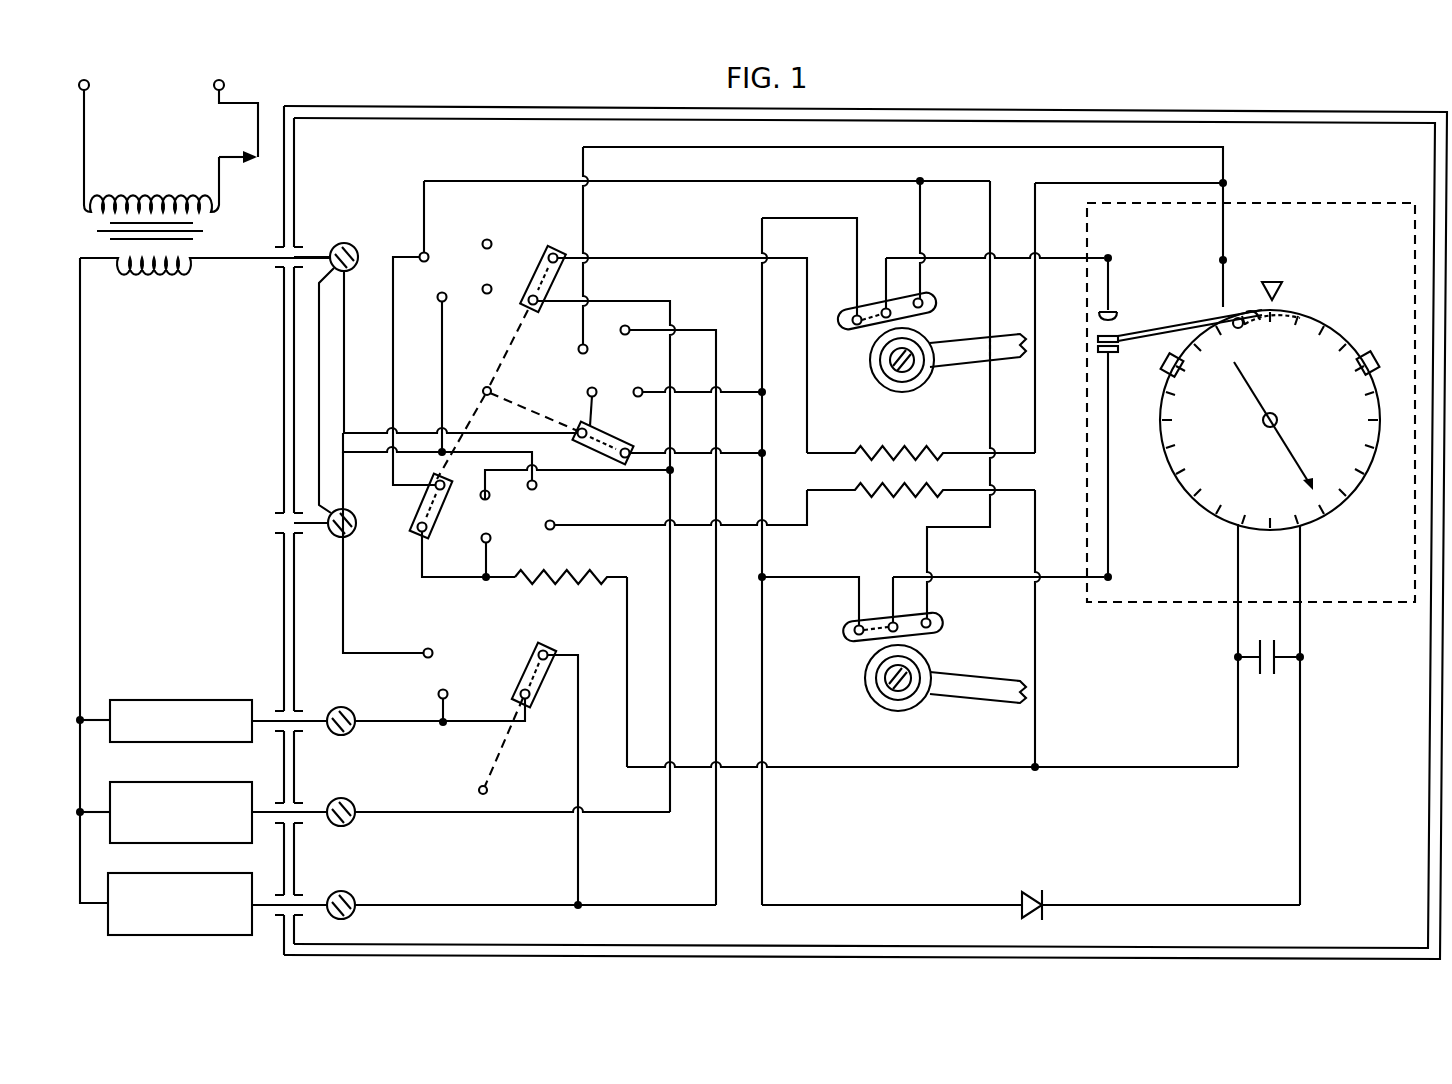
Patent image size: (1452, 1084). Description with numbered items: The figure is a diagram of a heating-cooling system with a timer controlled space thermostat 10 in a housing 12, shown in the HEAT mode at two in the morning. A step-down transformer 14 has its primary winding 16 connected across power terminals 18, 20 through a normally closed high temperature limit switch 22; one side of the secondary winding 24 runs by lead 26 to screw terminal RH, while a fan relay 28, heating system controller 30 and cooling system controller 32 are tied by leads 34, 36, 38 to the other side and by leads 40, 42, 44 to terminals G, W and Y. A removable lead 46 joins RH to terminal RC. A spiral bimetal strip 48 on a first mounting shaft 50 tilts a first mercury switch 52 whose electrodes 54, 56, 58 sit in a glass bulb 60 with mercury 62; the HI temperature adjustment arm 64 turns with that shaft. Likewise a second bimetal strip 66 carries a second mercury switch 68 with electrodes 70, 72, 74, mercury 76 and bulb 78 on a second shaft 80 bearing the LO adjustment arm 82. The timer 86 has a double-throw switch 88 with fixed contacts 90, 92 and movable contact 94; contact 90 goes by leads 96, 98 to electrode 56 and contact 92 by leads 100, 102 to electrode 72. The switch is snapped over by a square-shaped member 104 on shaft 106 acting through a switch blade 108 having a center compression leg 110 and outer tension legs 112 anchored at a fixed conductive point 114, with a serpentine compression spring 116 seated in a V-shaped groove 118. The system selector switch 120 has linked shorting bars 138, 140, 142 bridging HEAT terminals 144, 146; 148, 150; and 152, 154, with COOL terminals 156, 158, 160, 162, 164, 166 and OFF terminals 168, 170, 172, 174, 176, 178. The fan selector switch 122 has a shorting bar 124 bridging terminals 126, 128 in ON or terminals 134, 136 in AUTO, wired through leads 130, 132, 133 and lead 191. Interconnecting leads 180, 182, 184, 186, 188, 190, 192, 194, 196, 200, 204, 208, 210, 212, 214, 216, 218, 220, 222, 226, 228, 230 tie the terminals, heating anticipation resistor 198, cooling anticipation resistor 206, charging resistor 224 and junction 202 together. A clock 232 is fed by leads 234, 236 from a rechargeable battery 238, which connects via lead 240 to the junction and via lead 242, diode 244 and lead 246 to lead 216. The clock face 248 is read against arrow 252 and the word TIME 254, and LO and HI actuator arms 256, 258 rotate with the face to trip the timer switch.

The timer controlled space thermostat 10 is at (602, 108).
The housing 12 is at (392, 106).
The voltage step-down transformer 14 is at (210, 233).
The primary winding 16 is at (155, 196).
The terminal 18 is at (88, 82).
The terminal 20 is at (224, 82).
The high temperature limit switch 22 is at (240, 150).
The secondary winding 24 is at (146, 272).
The lead 26 is at (230, 260).
The fan relay 28 is at (170, 700).
The heating system controller 30 is at (170, 782).
The cooling system controller 32 is at (165, 873).
The lead 34 is at (85, 717).
The lead 36 is at (85, 809).
The lead 38 is at (85, 900).
The lead 40 is at (262, 717).
The lead 42 is at (265, 808).
The lead 44 is at (265, 900).
The lead 46 is at (318, 378).
The bimetal strip 48 is at (880, 383).
The first rotatably adjustable mounting shaft 50 is at (890, 364).
The first single-pole double-throw mercury switch 52 is at (932, 304).
The electrode 54 is at (853, 316).
The center electrode 56 is at (884, 309).
The electrode 58 is at (915, 300).
The glass bulb 60 is at (930, 315).
The mercury 62 is at (876, 332).
The first temperature adjustment arm 64 is at (960, 355).
The second bimetal strip 66 is at (877, 700).
The second single-pole double-throw mercury switch 68 is at (939, 626).
The electrode 70 is at (855, 626).
The center electrode 72 is at (890, 623).
The electrode 74 is at (922, 619).
The mercury 76 is at (872, 640).
The glass bulb 78 is at (930, 637).
The second rotatably adjustable mounting shaft 80 is at (888, 682).
The second temperature adjustment arm 82 is at (963, 692).
The timer 86 is at (1272, 203).
The single-pole double-throw switch 88 is at (1128, 323).
The fixed contact 90 is at (1100, 313).
The fixed contact 92 is at (1099, 349).
The movable contact 94 is at (1099, 338).
The lead 96 is at (1112, 278).
The lead 98 is at (1108, 256).
The lead 100 is at (1112, 540).
The lead 102 is at (1105, 580).
The square-shaped member 104 is at (1295, 312).
The shaft 106 is at (1265, 336).
The switch blade 108 is at (1118, 344).
The center compression leg 110 is at (1175, 334).
The outer tension legs 112 is at (1115, 350).
The fixed conductive point 114 is at (1244, 376).
The serpentine compression spring 116 is at (1232, 326).
The V-shaped groove 118 is at (1258, 312).
The system selector switch 120 is at (453, 256).
The fan selector switch 122 is at (459, 609).
The shorting bar 124 is at (539, 655).
The terminal 126 is at (424, 650).
The terminal 128 is at (440, 693).
The lead 130 is at (343, 640).
The lead 132 is at (430, 722).
The lead 133 is at (488, 724).
The terminal 134 is at (548, 645).
The terminal 136 is at (521, 693).
The shorting bar 138 is at (540, 255).
The shorting bar 140 is at (615, 472).
The shorting bar 142 is at (415, 508).
The HEAT position terminal 144 is at (536, 303).
The HEAT position terminal 146 is at (550, 256).
The HEAT position terminal 148 is at (572, 436).
The HEAT position terminal 150 is at (624, 445).
The HEAT position terminal 152 is at (440, 480).
The HEAT position terminal 154 is at (418, 530).
The COOL position terminal 156 is at (440, 298).
The COOL position terminal 158 is at (420, 256).
The COOL position terminal 160 is at (579, 349).
The COOL position terminal 162 is at (626, 326).
The COOL position terminal 164 is at (540, 486).
The COOL position terminal 166 is at (553, 526).
The OFF position terminal 168 is at (486, 293).
The OFF position terminal 170 is at (484, 244).
The OFF position terminal 172 is at (582, 378).
The OFF position terminal 174 is at (640, 388).
The OFF position terminal 176 is at (490, 538).
The OFF position terminal 178 is at (490, 560).
The lead 180 is at (732, 181).
The lead 182 is at (923, 222).
The lead 184 is at (393, 350).
The lead 186 is at (442, 350).
The lead 188 is at (388, 453).
The lead 190 is at (700, 330).
The lead 191 is at (576, 750).
The lead 192 is at (834, 147).
The lead 194 is at (1220, 262).
The lead 196 is at (1066, 183).
The heating anticipation resistor 198 is at (905, 452).
The lead 200 is at (674, 258).
The junction 202 is at (1037, 766).
The lead 204 is at (615, 528).
The cooling anticipation resistor 206 is at (890, 495).
The lead 208 is at (1036, 667).
The lead 210 is at (626, 301).
The lead 212 is at (632, 471).
The lead 214 is at (740, 452).
The lead 216 is at (765, 430).
The lead 218 is at (524, 432).
The lead 220 is at (588, 392).
The lead 222 is at (420, 550).
The charging resistor 224 is at (560, 580).
The lead 226 is at (624, 768).
The lead 228 is at (716, 388).
The lead 230 is at (483, 558).
The clock 232 is at (1320, 523).
The lead 234 is at (1238, 580).
The lead 236 is at (1300, 580).
The storage battery 238 is at (1278, 670).
The lead 240 is at (1112, 767).
The lead 242 is at (1148, 905).
The diode 244 is at (1048, 912).
The lead 246 is at (898, 905).
The clock face 248 is at (1337, 505).
The arrow 252 is at (1285, 288).
The word TIME 254 is at (1288, 258).
The switch actuator arm 256 is at (1137, 349).
The switch actuator arm 258 is at (1378, 355).